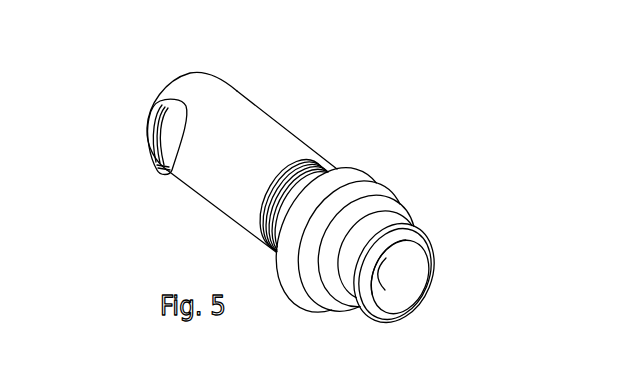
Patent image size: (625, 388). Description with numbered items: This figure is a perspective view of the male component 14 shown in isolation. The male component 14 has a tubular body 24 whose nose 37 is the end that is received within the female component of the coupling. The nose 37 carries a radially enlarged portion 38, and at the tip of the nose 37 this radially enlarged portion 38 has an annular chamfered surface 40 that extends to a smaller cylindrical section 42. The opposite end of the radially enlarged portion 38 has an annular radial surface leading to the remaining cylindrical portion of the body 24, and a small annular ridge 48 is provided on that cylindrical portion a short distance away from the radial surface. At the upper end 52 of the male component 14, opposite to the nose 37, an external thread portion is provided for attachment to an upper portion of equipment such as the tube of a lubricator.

The male component 14 is at (128, 115).
The tubular body 24 is at (258, 130).
The nose 37 is at (424, 181).
The radially enlarged portion 38 is at (363, 181).
The annular chamfered surface 40 is at (328, 306).
The smaller cylindrical section 42 is at (392, 233).
The small annular ridge 48 is at (317, 164).
The upper end 52 is at (180, 68).